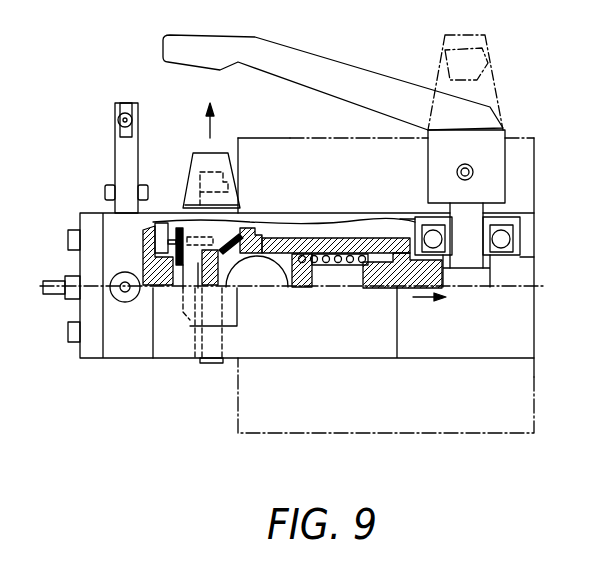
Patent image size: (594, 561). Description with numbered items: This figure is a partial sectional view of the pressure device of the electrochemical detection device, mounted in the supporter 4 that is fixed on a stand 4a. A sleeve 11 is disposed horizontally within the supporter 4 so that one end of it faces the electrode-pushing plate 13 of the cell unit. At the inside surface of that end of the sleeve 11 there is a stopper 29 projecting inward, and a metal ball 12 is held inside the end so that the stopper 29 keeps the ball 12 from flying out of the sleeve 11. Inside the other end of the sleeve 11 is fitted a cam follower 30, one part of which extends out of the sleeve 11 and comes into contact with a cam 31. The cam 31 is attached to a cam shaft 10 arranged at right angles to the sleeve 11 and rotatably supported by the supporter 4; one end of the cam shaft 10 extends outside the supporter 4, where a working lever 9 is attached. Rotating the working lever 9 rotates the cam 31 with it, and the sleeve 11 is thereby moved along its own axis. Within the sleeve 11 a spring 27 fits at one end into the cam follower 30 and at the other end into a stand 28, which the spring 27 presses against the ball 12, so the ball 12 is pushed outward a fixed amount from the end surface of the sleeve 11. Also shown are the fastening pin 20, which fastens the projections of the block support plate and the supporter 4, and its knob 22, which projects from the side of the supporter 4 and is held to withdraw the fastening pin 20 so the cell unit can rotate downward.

The supporter 4 is at (508, 327).
The stand 4a is at (508, 407).
The working lever 9 is at (350, 88).
The cam shaft 10 is at (470, 218).
The sleeve 11 is at (297, 240).
The ball 12 is at (262, 265).
The electrode-pushing plate 13 is at (238, 232).
The fastening pin 20 is at (205, 367).
The knob 22 is at (229, 150).
The spring 27 is at (343, 256).
The stand 28 is at (296, 288).
The stopper 29 is at (246, 265).
The cam follower 30 is at (380, 267).
The cam 31 is at (482, 273).